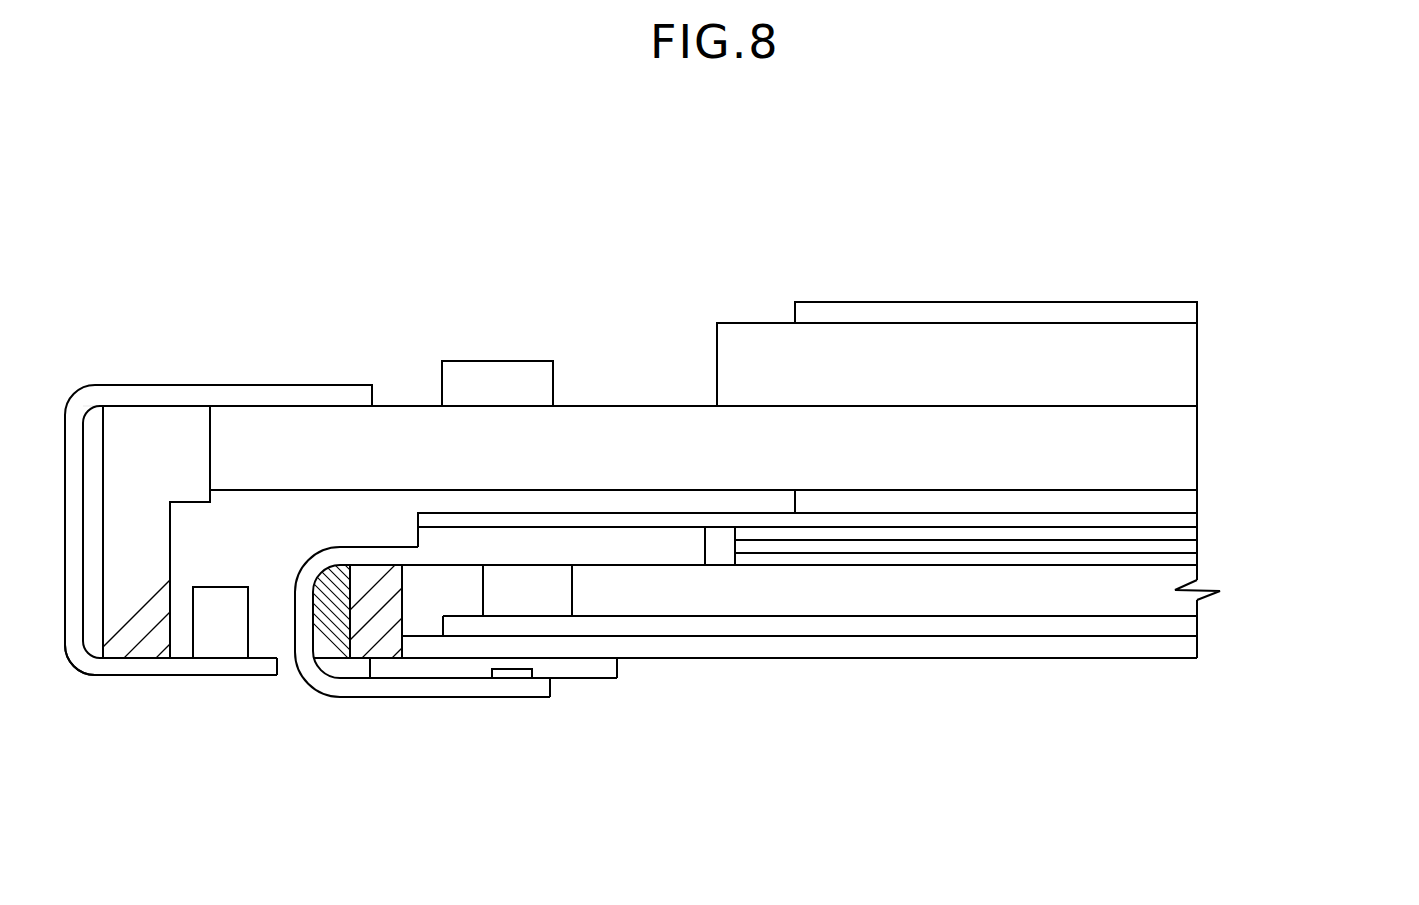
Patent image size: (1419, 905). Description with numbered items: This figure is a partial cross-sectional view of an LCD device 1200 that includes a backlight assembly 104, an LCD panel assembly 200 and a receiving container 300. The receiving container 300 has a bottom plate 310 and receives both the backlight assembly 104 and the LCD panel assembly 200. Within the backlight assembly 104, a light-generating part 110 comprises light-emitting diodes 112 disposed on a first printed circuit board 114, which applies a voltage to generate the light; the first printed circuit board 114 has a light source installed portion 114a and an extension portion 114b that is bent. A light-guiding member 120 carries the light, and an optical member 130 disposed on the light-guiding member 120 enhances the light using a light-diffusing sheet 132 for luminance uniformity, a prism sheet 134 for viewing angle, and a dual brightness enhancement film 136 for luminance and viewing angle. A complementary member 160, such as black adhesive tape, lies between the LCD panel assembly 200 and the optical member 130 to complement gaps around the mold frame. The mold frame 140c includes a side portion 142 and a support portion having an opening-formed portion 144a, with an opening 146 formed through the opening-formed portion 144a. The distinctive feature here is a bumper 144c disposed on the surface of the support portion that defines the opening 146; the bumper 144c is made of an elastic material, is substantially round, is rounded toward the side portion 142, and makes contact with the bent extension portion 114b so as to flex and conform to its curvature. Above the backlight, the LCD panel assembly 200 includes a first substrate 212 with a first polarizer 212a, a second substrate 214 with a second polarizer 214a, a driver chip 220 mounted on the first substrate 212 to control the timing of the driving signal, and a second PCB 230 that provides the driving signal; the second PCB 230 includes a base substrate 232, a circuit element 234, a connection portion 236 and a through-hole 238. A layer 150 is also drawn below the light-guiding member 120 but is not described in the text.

The LCD device 1200 is at (612, 204).
The LCD panel assembly 200 is at (927, 263).
The second polarizer 214a is at (1190, 313).
The second substrate 214 is at (1190, 386).
The first substrate 212 is at (1190, 423).
The first polarizer 212a is at (1200, 501).
The driver chip 220 is at (485, 367).
The complementary member 160 is at (1192, 514).
The optical member 130 is at (886, 549).
The dual brightness enhancement film 136 is at (1192, 534).
The prism sheet 134 is at (1192, 547).
The light-diffusing sheet 132 is at (1192, 560).
The light-guiding member 120 is at (1192, 612).
The protection film 150 is at (1192, 627).
The bottom plate 310 is at (1192, 650).
The receiving container 300 is at (1102, 678).
The backlight assembly 104 is at (1322, 622).
The light-generating part 110 is at (755, 713).
The light-emitting diodes 112 is at (563, 610).
The first printed circuit board 114 is at (755, 695).
The light source installed portion 114a is at (520, 557).
The extension portion 114b is at (520, 692).
The mold frame 140c is at (155, 294).
The side portion 142 is at (168, 415).
The opening 146 is at (247, 532).
The bumper 144c is at (343, 565).
The opening-formed portion 144a is at (372, 575).
The second PCB 230 is at (148, 797).
The base substrate 232 is at (167, 668).
The circuit element 234 is at (222, 650).
The through-hole 238 is at (290, 668).
The connection portion 236 is at (490, 672).